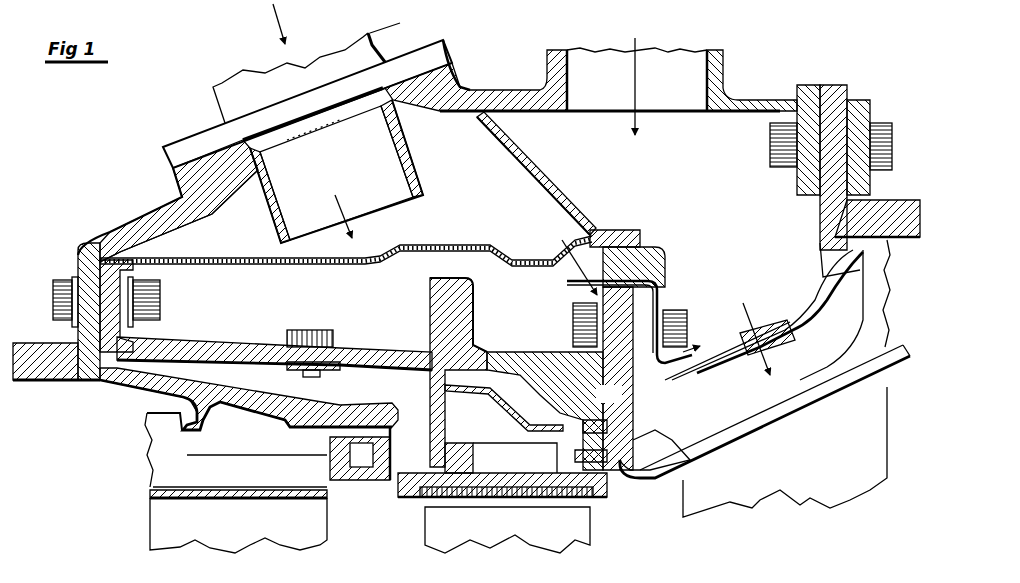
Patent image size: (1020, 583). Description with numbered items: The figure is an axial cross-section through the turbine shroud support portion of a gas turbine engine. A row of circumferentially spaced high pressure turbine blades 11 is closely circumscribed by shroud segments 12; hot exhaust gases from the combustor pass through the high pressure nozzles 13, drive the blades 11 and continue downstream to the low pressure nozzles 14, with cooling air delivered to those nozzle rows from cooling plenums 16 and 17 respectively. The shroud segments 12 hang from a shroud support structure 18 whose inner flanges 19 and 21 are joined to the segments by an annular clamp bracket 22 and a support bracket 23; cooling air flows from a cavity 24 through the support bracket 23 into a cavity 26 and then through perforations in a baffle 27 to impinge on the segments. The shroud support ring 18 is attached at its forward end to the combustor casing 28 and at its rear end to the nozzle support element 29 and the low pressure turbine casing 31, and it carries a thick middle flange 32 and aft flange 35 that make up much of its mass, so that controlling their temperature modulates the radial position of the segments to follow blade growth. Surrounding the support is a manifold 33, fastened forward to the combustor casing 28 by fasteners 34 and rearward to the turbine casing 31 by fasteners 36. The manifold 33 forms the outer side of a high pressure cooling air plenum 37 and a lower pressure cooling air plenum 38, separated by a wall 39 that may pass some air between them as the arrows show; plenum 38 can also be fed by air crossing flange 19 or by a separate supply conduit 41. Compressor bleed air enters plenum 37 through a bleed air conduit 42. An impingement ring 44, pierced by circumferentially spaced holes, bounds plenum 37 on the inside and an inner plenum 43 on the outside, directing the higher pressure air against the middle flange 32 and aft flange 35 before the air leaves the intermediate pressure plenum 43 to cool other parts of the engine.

The high pressure turbine blades 11 is at (513, 536).
The shroud segments 12 is at (417, 487).
The high pressure nozzles 13 is at (245, 534).
The low pressure nozzles 14 is at (800, 468).
The cooling plenum 16 is at (255, 448).
The cooling plenum 17 is at (819, 364).
The shroud support structure 18 is at (375, 346).
The inner flange 19 is at (597, 433).
The inner flange 21 is at (470, 395).
The annular clamp bracket 22 is at (603, 417).
The support bracket 23 is at (430, 387).
The cavity 24 is at (378, 399).
The cavity 26 is at (484, 445).
The baffle 27 is at (507, 457).
The combustor casing 28 is at (33, 380).
The nozzle support element 29 is at (820, 278).
The low pressure turbine casing 31 is at (870, 110).
The middle flange 32 is at (473, 303).
The manifold 33 is at (485, 90).
The fasteners 34 is at (53, 298).
The aft flange 35 is at (630, 317).
The fasteners 36 is at (782, 170).
The high pressure cooling air plenum 37 is at (480, 196).
The lower pressure cooling air plenum 38 is at (668, 196).
The wall 39 is at (547, 181).
The separate supply conduit 41 is at (727, 57).
The bleed air conduit 42 is at (400, 23).
The inner plenum 43 is at (313, 315).
The impingement ring 44 is at (200, 264).